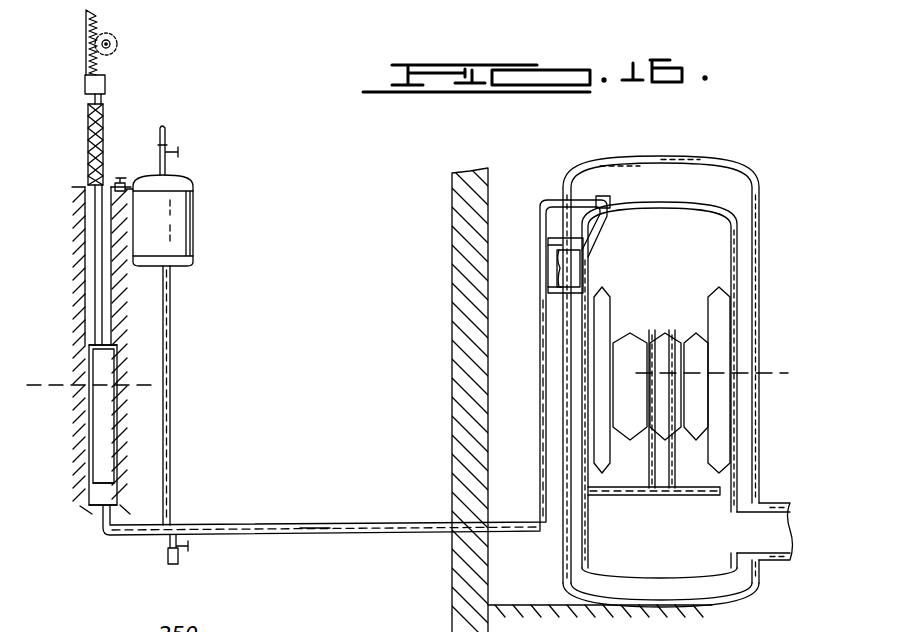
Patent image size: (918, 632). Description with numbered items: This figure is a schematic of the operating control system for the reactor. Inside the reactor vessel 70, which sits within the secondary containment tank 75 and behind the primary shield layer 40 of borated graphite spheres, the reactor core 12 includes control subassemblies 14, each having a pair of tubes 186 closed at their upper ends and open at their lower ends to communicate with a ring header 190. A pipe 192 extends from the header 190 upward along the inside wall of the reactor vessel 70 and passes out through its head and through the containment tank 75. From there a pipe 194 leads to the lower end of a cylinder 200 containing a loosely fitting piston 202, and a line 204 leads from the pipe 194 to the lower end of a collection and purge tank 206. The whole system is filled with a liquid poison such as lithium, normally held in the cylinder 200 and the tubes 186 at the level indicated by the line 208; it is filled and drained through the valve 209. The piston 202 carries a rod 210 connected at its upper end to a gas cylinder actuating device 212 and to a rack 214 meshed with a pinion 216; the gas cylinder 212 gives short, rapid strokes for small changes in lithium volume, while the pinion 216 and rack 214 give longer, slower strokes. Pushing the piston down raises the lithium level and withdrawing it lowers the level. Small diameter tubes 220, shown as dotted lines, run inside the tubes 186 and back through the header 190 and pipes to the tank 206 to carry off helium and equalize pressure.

The rack 214 is at (85, 38).
The pinion 216 is at (106, 36).
The gas cylinder actuating device 212 is at (85, 85).
The rod 210 is at (96, 290).
The collection and purge tank 206 is at (186, 223).
The line 208 is at (67, 385).
The piston 202 is at (103, 425).
The cylinder 200 is at (95, 492).
The line 204 is at (176, 465).
The pipe 194 is at (394, 521).
The small diameter tube 220 is at (306, 524).
The valve 209 is at (168, 550).
The layer of borated graphite spheres 40 is at (468, 283).
The pipe 192 is at (590, 268).
The core assembly 14 is at (713, 284).
The reactor vessel 70 is at (736, 256).
The secondary containment tank 75 is at (757, 278).
The fuel elements 12 is at (633, 328).
The tubes 186 is at (671, 330).
The ring header 190 is at (647, 497).